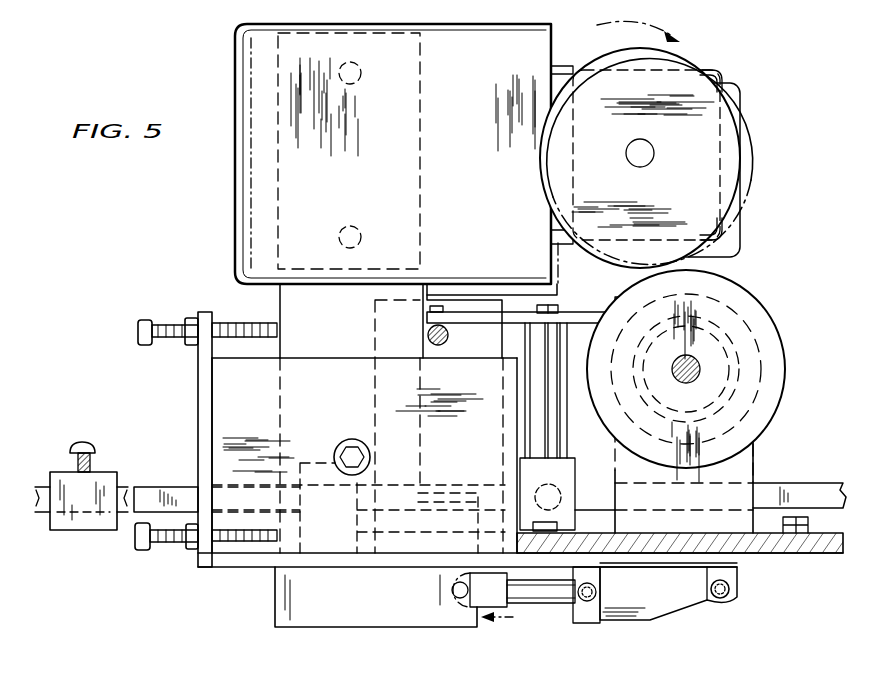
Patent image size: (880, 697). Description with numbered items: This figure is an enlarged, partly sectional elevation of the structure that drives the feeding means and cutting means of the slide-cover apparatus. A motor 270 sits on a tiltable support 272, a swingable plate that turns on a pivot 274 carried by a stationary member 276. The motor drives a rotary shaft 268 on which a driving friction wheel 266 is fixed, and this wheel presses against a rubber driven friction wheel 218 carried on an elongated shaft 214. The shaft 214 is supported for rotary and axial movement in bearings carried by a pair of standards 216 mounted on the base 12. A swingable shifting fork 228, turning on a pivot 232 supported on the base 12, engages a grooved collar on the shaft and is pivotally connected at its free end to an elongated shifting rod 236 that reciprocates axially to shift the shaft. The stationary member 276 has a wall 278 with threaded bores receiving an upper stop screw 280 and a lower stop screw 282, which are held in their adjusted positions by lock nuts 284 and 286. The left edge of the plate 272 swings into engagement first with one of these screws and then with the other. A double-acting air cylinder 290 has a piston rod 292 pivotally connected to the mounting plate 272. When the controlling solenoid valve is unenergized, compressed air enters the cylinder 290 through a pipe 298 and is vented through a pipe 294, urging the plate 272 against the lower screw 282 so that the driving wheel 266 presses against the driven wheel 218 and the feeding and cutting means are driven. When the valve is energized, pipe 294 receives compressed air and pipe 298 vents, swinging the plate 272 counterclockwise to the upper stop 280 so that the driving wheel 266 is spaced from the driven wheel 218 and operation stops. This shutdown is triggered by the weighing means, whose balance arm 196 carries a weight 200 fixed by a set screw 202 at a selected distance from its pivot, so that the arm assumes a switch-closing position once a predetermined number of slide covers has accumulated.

The base 12 is at (827, 554).
The balance arm 196 is at (180, 487).
The weight 200 is at (80, 530).
The set screw 202 is at (83, 441).
The elongated shaft 214 is at (700, 368).
The standards 216 is at (742, 460).
The driven friction wheel 218 is at (767, 317).
The shifting fork 228 is at (510, 324).
The pivot 232 is at (563, 307).
The shifting rod 236 is at (442, 346).
The driving friction wheel 266 is at (708, 182).
The rotary shaft 268 is at (628, 150).
The motor 270 is at (247, 57).
The tiltable support 272 is at (300, 618).
The pivot 274 is at (355, 445).
The stationary member 276 is at (262, 423).
The wall 278 is at (200, 415).
The stop screw 280 is at (172, 322).
The stop screw 282 is at (160, 550).
The lock nut 284 is at (192, 318).
The lock nut 286 is at (193, 551).
The double-acting air cylinder 290 is at (678, 600).
The piston rod 292 is at (548, 598).
The pipe 294 is at (590, 603).
The pipe 298 is at (730, 588).